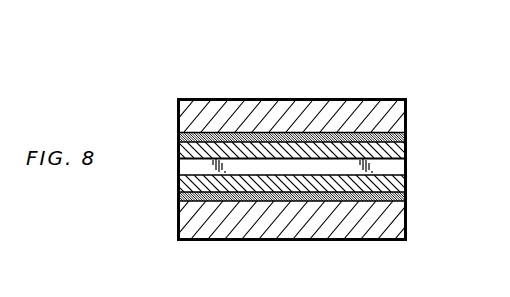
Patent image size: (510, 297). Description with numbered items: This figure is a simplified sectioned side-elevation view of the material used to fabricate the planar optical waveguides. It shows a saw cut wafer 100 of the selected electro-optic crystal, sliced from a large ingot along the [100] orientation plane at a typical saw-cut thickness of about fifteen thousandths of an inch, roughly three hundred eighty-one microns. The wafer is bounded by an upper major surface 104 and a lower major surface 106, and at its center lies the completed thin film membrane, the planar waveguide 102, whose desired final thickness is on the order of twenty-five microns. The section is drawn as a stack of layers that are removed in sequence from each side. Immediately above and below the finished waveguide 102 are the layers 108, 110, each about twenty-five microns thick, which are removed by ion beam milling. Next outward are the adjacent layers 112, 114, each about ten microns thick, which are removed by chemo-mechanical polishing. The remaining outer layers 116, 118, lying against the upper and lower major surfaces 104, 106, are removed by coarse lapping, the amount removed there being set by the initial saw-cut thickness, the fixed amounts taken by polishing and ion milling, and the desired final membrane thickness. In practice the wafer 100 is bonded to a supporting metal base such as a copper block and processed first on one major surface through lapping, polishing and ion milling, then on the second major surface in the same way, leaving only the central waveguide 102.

The saw cut wafer 100 is at (178, 98).
The planar waveguide 102 is at (397, 167).
The upper major surface 104 is at (295, 99).
The lower major surface 106 is at (285, 242).
The ion milled layer 108 is at (407, 139).
The ion milled layer 110 is at (396, 186).
The polished layer 112 is at (396, 117).
The polished layer 114 is at (407, 201).
The lapped layer 116 is at (408, 115).
The lapped layer 118 is at (397, 231).